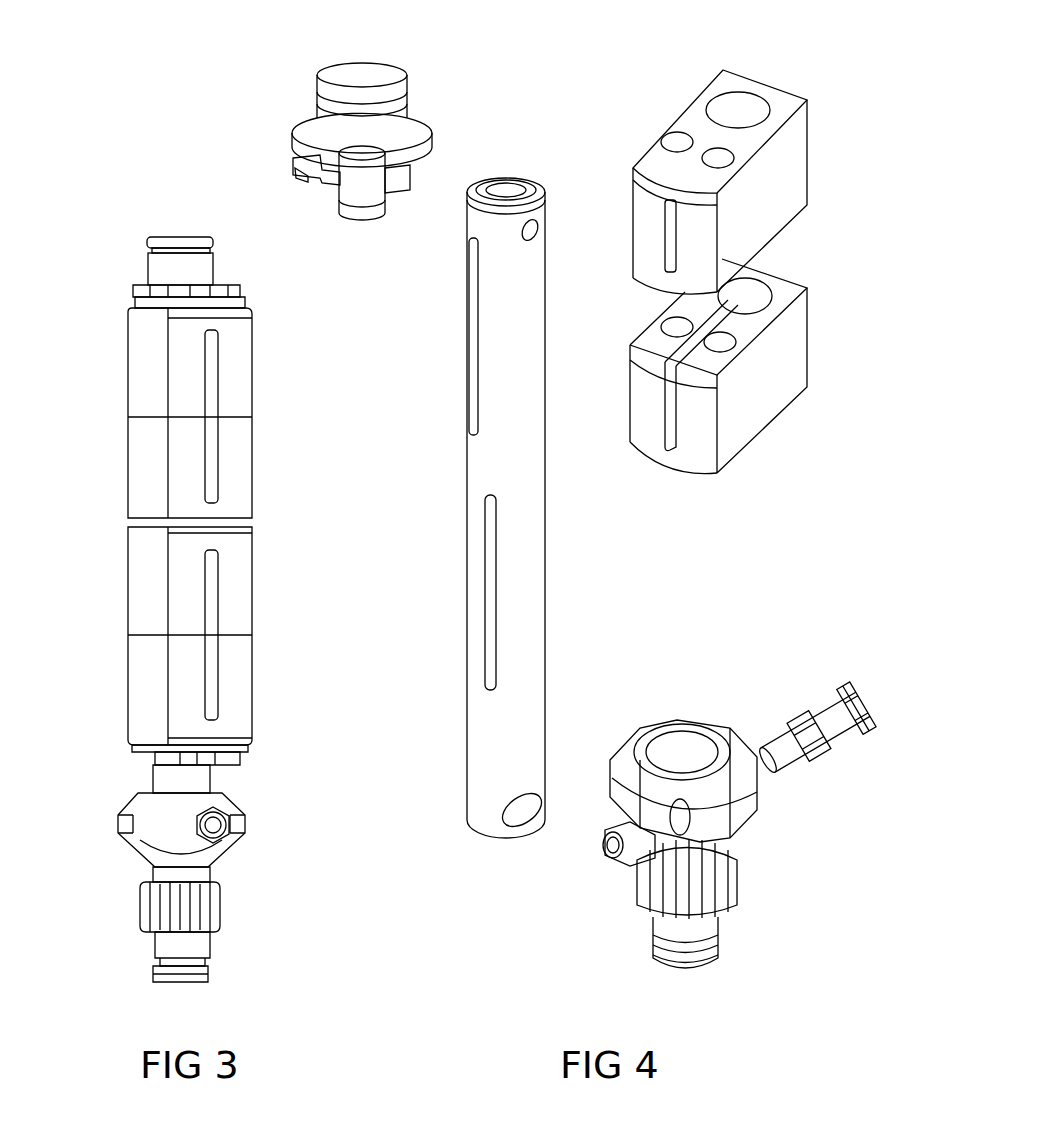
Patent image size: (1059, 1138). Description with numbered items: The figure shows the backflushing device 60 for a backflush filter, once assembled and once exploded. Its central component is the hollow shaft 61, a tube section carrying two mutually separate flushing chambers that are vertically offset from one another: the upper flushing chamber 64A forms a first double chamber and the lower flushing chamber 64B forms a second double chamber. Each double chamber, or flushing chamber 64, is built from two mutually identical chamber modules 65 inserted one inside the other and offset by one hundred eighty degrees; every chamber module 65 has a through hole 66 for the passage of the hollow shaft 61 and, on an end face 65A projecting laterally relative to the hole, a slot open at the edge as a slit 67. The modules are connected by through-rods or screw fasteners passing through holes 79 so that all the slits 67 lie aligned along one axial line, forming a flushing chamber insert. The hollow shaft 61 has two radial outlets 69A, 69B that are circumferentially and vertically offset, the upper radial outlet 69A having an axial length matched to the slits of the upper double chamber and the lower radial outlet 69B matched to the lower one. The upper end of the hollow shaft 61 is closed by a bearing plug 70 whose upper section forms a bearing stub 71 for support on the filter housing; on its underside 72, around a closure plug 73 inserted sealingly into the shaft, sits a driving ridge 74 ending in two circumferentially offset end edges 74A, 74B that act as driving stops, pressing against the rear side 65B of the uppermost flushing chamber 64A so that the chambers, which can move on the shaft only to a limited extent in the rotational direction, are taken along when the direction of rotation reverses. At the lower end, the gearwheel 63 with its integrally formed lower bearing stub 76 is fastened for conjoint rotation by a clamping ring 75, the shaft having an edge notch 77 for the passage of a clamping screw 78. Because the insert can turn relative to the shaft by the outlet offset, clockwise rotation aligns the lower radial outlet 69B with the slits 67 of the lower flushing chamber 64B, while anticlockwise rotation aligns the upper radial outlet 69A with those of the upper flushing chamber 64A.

In FIG. 3, the backflushing device 60 is at (135, 238).
In FIG. 4, the backflushing device 60 is at (770, 85).
In FIG. 4, the hollow shaft 61 is at (512, 478).
In FIG. 3, the gearwheel 63 is at (235, 915).
In FIG. 4, the gearwheel 63 is at (750, 878).
In FIG. 4, the flushing chamber 64 is at (712, 490).
In FIG. 3, the upper flushing chamber 64A is at (288, 480).
In FIG. 3, the lower flushing chamber 64B is at (270, 580).
In FIG. 3, the chamber module 65 is at (238, 380).
In FIG. 4, the chamber module 65 is at (668, 90).
In FIG. 4, the end face 65A is at (695, 228).
In FIG. 4, the rear side 65B is at (630, 242).
In FIG. 4, the through hole 66 is at (735, 120).
In FIG. 3, the slit 67 is at (208, 357).
In FIG. 4, the slit 67 is at (668, 262).
In FIG. 4, the upper radial outlet 69A is at (478, 340).
In FIG. 4, the lower radial outlet 69B is at (493, 560).
In FIG. 3, the bearing plug 70 is at (265, 175).
In FIG. 3, the bearing stub 71 is at (390, 85).
In FIG. 3, the underside 72 is at (404, 148).
In FIG. 3, the closure plug 73 is at (370, 193).
In FIG. 3, the driving ridge 74 is at (315, 176).
In FIG. 3, the end edge 74A is at (408, 187).
In FIG. 3, the end edge 74B is at (310, 162).
In FIG. 3, the clamping ring 75 is at (262, 830).
In FIG. 4, the clamping ring 75 is at (757, 723).
In FIG. 4, the lower bearing stub 76 is at (712, 950).
In FIG. 4, the notch 77 is at (530, 815).
In FIG. 4, the clamping screw 78 is at (832, 738).
In FIG. 4, the hole 79 is at (730, 158).